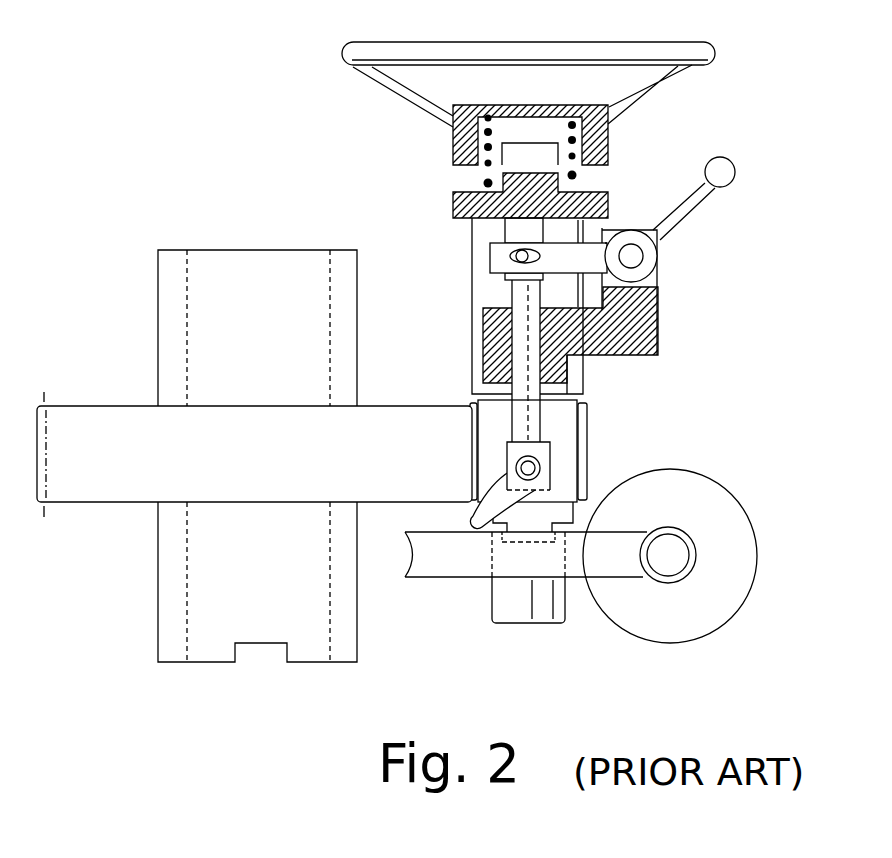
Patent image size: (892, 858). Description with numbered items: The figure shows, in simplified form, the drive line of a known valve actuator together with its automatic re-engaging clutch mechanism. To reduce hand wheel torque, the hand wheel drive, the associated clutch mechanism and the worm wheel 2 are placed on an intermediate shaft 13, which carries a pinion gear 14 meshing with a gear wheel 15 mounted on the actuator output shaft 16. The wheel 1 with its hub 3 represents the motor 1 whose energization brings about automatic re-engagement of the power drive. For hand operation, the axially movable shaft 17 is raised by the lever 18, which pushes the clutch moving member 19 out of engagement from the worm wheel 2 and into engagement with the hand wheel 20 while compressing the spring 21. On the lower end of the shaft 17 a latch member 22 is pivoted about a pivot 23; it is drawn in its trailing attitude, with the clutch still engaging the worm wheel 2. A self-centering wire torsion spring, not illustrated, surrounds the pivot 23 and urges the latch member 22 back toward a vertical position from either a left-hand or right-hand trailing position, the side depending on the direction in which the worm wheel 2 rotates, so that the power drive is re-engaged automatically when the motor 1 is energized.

The motor 1 is at (647, 632).
The worm wheel 2 is at (435, 568).
The wheel hub 3 is at (673, 570).
The intermediate shaft 13 is at (543, 607).
The pinion gear 14 is at (570, 443).
The gear wheel 15 is at (105, 432).
The actuator output shaft 16 is at (170, 607).
The axially movable shaft 17 is at (533, 370).
The lever 18 is at (705, 165).
The clutch moving member 19 is at (460, 205).
The hand wheel 20 is at (353, 55).
The spring 21 is at (480, 152).
The latch member 22 is at (475, 517).
The pivot 23 is at (510, 467).